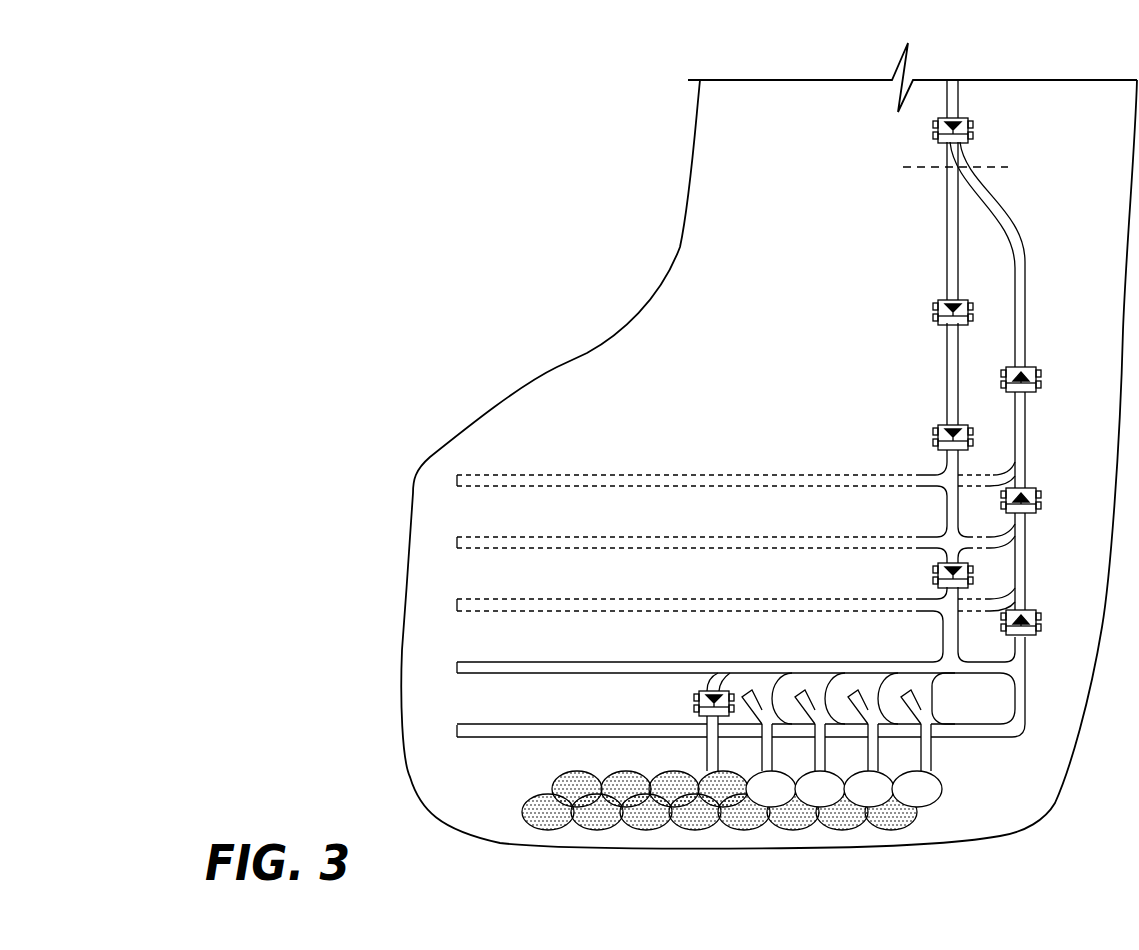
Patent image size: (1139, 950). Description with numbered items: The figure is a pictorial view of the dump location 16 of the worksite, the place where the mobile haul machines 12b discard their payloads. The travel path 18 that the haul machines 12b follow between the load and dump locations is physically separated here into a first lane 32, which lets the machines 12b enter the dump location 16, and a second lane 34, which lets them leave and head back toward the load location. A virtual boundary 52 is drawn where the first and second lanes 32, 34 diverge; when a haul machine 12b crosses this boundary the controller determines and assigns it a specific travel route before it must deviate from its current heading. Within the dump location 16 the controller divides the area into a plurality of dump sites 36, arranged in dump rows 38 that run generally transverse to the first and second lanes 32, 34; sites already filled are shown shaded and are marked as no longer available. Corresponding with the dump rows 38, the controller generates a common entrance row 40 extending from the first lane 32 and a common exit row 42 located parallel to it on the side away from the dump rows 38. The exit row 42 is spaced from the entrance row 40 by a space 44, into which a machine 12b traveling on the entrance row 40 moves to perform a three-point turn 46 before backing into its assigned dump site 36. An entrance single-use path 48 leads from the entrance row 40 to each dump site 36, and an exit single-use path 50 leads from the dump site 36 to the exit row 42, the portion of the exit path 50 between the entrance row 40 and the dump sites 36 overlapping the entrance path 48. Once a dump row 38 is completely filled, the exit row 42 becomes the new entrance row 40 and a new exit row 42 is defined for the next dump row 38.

The dump location 16 is at (1031, 781).
The travel path 18 is at (884, 211).
The first lane 32 is at (947, 272).
The second lane 34 is at (1020, 263).
The virtual boundary 52 is at (992, 170).
The mobile haul machine 12b is at (973, 127).
The exit row 42 is at (530, 667).
The entrance row 40 is at (499, 735).
The space 44 is at (457, 668).
The exit single-use path 50 is at (847, 678).
The 3-point turn 46 is at (888, 702).
The entrance single-use path 48 is at (933, 749).
The dump row 38 is at (541, 782).
The dump site 36 is at (780, 799).